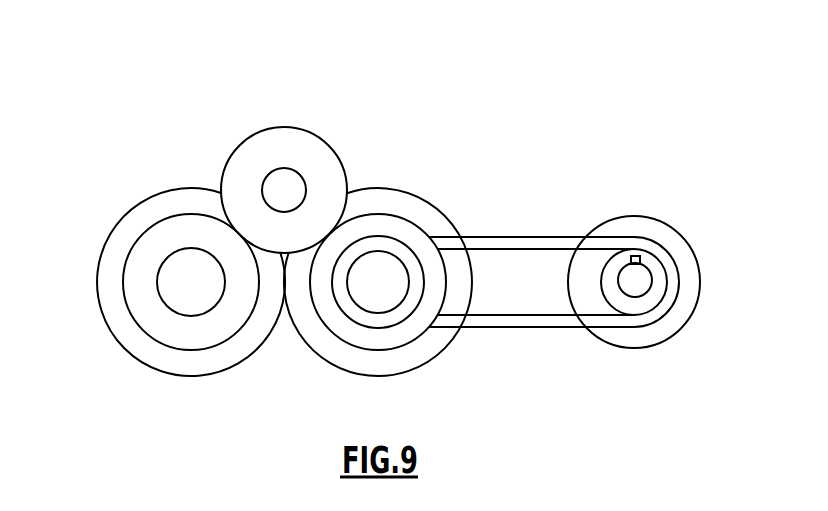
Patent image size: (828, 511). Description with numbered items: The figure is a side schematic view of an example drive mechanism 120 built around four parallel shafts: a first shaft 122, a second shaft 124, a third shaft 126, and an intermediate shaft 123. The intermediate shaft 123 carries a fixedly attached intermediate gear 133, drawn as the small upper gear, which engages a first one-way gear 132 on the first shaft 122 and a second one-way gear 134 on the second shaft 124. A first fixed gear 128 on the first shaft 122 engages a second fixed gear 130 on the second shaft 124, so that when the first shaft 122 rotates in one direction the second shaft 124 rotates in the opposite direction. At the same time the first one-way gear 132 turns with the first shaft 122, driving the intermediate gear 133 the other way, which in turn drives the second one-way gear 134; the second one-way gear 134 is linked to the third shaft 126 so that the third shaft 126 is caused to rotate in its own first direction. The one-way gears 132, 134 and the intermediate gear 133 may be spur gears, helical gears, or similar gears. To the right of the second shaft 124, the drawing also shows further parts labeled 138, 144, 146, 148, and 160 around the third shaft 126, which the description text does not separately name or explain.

The drive mechanism 120 is at (478, 91).
The first shaft 122 is at (158, 287).
The intermediate shaft 123 is at (300, 174).
The second shaft 124 is at (380, 313).
The third shaft 126 is at (647, 292).
The first fixed gear 128 is at (153, 193).
The second fixed gear 130 is at (416, 193).
The first one-way gear 132 is at (127, 257).
The intermediate gear 133 is at (288, 127).
The second one-way gear 134 is at (345, 343).
The pulley 138 is at (403, 315).
The pulley 144 is at (653, 267).
The belt 146 is at (505, 237).
The flange 148 is at (647, 216).
The key 160 is at (640, 258).